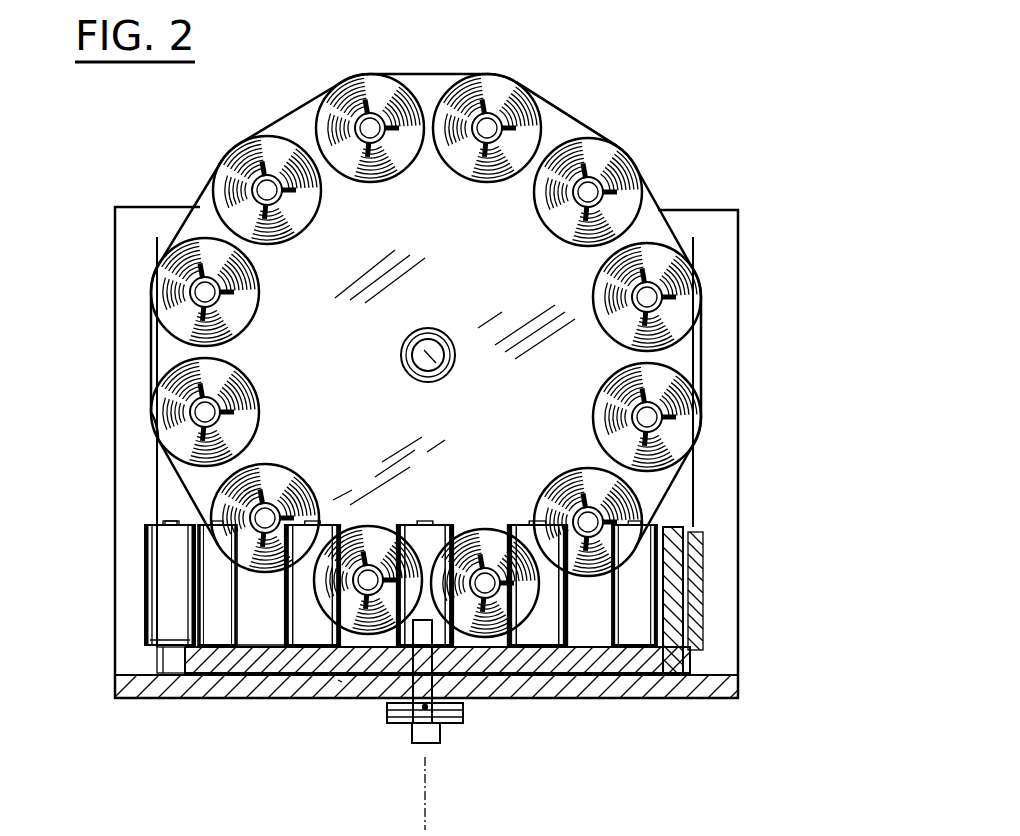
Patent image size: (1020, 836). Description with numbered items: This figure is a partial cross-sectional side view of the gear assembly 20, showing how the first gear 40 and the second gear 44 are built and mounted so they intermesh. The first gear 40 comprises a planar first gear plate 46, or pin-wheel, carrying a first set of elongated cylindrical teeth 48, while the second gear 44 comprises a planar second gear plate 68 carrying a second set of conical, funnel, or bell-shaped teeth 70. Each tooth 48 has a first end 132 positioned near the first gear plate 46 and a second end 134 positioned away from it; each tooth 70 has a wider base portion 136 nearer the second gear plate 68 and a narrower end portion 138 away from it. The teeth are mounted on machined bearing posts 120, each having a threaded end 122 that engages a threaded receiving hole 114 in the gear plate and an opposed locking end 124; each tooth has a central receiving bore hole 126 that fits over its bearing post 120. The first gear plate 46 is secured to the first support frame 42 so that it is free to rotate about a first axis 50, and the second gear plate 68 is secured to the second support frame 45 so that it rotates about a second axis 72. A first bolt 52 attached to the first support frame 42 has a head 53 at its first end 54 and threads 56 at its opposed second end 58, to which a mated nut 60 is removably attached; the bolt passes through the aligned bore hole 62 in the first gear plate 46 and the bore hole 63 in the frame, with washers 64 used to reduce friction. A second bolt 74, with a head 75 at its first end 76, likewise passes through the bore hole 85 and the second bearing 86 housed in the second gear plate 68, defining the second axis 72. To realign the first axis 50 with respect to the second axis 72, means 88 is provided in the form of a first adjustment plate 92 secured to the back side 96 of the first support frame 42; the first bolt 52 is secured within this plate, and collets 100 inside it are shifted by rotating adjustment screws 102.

The assembly 20 is at (757, 135).
The first gear 40 is at (178, 660).
The first support frame 42 is at (112, 690).
The second gear 44 is at (183, 238).
The second support frame 45 is at (118, 400).
The first gear plate 46 is at (255, 645).
The teeth 48 is at (184, 594).
The first axis 50 is at (462, 728).
The first bolt 52 is at (365, 728).
The head 53 is at (365, 728).
The first end 54 is at (365, 725).
The threads 56 is at (387, 728).
The second end 58 is at (365, 728).
The nut 60 is at (462, 728).
The bore hole 62 is at (365, 725).
The bore hole 63 is at (440, 660).
The washers 64 is at (352, 685).
The second gear plate 68 is at (565, 118).
The teeth 70 is at (340, 225).
The second axis 72 is at (442, 328).
The second bolt 74 is at (442, 317).
The head 75 is at (442, 317).
The first end 76 is at (442, 317).
The bore hole 85 is at (450, 350).
The second bearing 86 is at (437, 341).
The means for changing position 88 is at (387, 728).
The first adjustment plate 92 is at (387, 728).
The back side 96 is at (630, 700).
The collets 100 is at (387, 728).
The adjustment screws 102 is at (387, 728).
The receiving holes 114 is at (232, 690).
The bearing posts 120 is at (429, 330).
The threaded end 122 is at (170, 690).
The locking end 124 is at (482, 113).
The receiving bore hole 126 is at (683, 575).
The first end 132 is at (333, 637).
The second end 134 is at (330, 557).
The base portion 136 is at (439, 420).
The end portion 138 is at (440, 320).